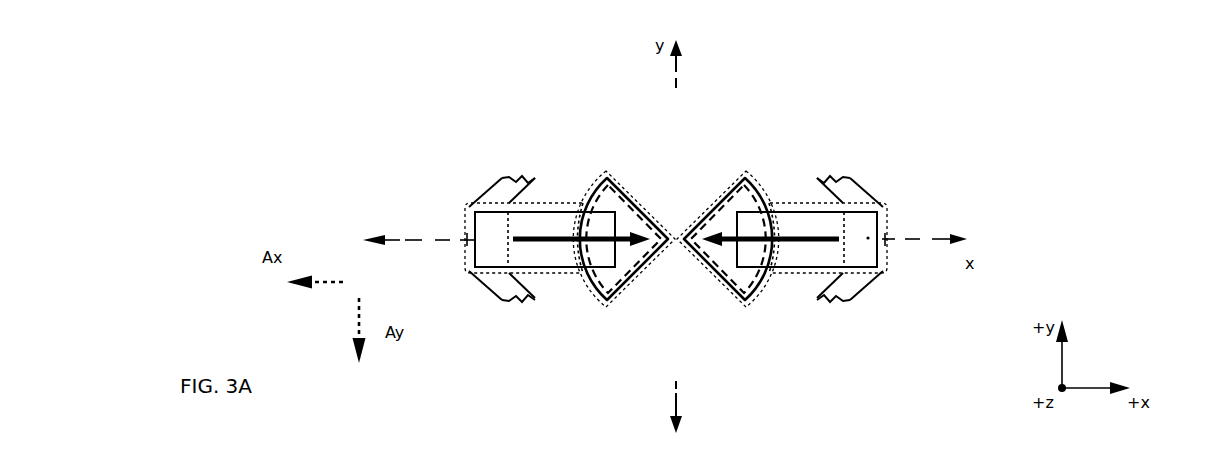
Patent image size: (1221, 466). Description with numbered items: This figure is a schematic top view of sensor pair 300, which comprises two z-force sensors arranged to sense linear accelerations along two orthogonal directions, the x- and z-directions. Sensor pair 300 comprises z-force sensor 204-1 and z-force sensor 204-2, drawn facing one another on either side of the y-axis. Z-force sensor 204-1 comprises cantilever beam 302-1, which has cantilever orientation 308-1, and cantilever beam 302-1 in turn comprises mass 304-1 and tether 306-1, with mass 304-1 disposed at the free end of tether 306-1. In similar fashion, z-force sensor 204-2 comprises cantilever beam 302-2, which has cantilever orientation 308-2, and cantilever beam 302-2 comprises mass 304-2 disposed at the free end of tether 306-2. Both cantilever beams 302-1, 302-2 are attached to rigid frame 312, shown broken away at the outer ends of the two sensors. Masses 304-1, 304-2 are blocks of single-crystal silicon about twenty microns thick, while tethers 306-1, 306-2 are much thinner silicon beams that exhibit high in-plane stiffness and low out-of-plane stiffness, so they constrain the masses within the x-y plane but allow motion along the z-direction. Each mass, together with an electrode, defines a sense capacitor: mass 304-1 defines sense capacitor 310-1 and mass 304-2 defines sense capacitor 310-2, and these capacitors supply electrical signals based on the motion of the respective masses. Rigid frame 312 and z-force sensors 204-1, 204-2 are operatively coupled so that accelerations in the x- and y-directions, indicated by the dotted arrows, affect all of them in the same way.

The sensor pair 300 is at (338, 86).
The z-force sensor 204-1 is at (603, 307).
The z-force sensor 204-2 is at (749, 170).
The cantilever beam 302-1 is at (562, 297).
The cantilever beam 302-2 is at (788, 201).
The mass 304-1 is at (610, 177).
The mass 304-2 is at (744, 302).
The tether 306-1 is at (543, 208).
The tether 306-2 is at (807, 273).
The cantilever orientation 308-1 is at (597, 235).
The cantilever orientation 308-2 is at (752, 236).
The sense capacitor 310-1 is at (623, 200).
The sense capacitor 310-2 is at (730, 282).
The rigid frame 312 is at (500, 194).